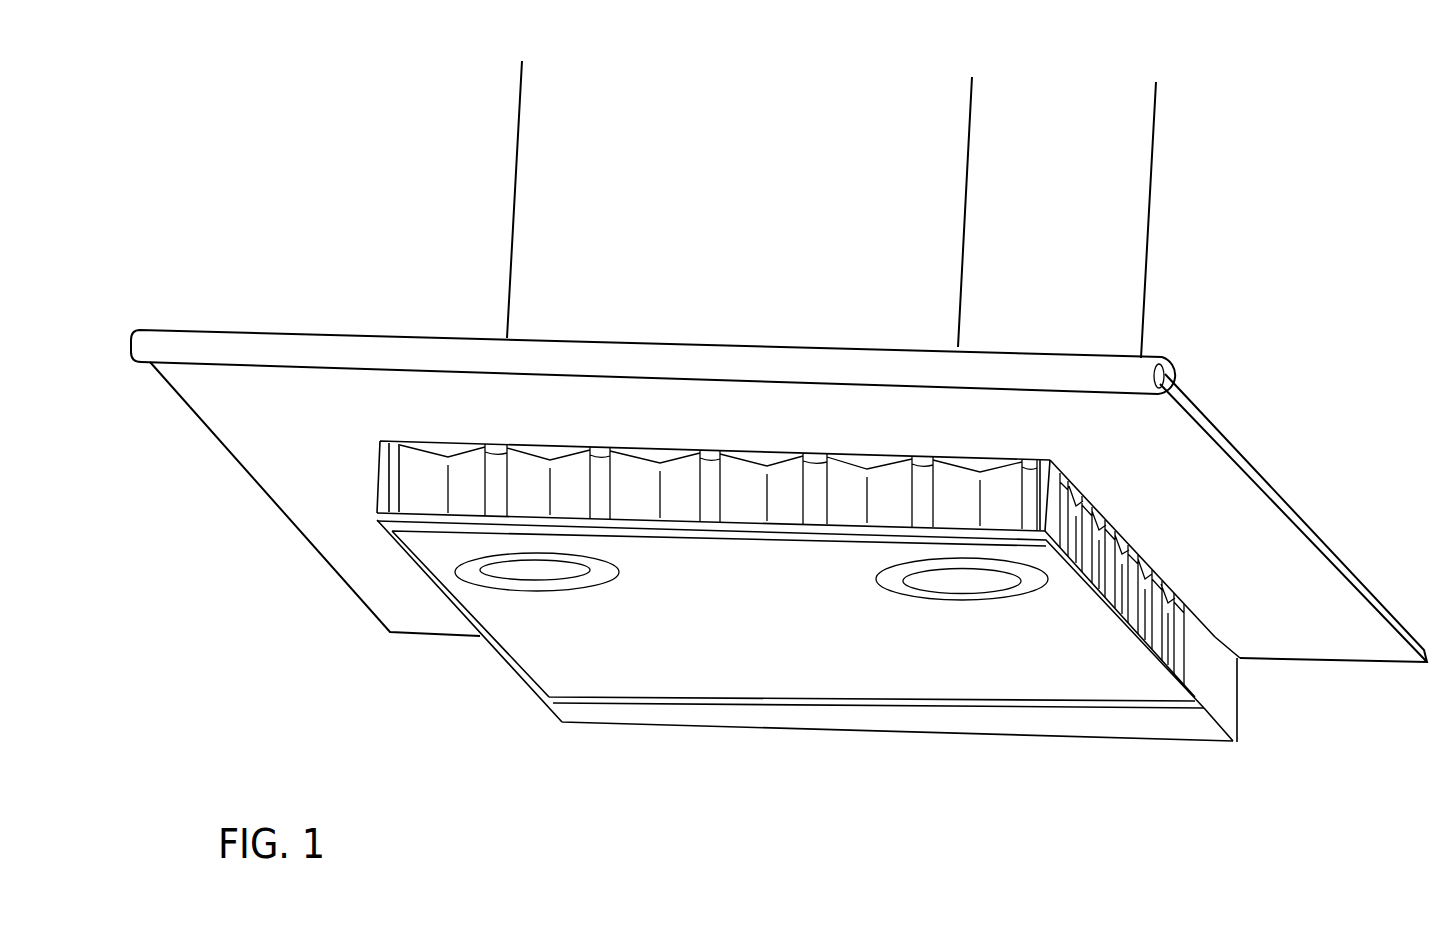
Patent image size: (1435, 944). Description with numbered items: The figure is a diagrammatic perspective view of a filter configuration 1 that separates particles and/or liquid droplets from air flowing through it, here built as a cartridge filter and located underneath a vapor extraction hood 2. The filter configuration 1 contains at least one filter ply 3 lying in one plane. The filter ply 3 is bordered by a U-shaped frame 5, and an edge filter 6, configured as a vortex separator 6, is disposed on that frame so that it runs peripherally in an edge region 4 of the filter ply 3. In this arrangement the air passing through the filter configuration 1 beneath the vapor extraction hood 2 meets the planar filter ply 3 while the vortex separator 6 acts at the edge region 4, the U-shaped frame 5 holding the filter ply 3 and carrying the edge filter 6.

The filter configuration 1 is at (873, 647).
The vapor extraction hood 2 is at (1187, 368).
The filter ply 3 is at (755, 658).
The edge region 4 is at (796, 646).
The U-shaped frame 5 is at (1157, 670).
The edge filter 6 is at (1243, 678).